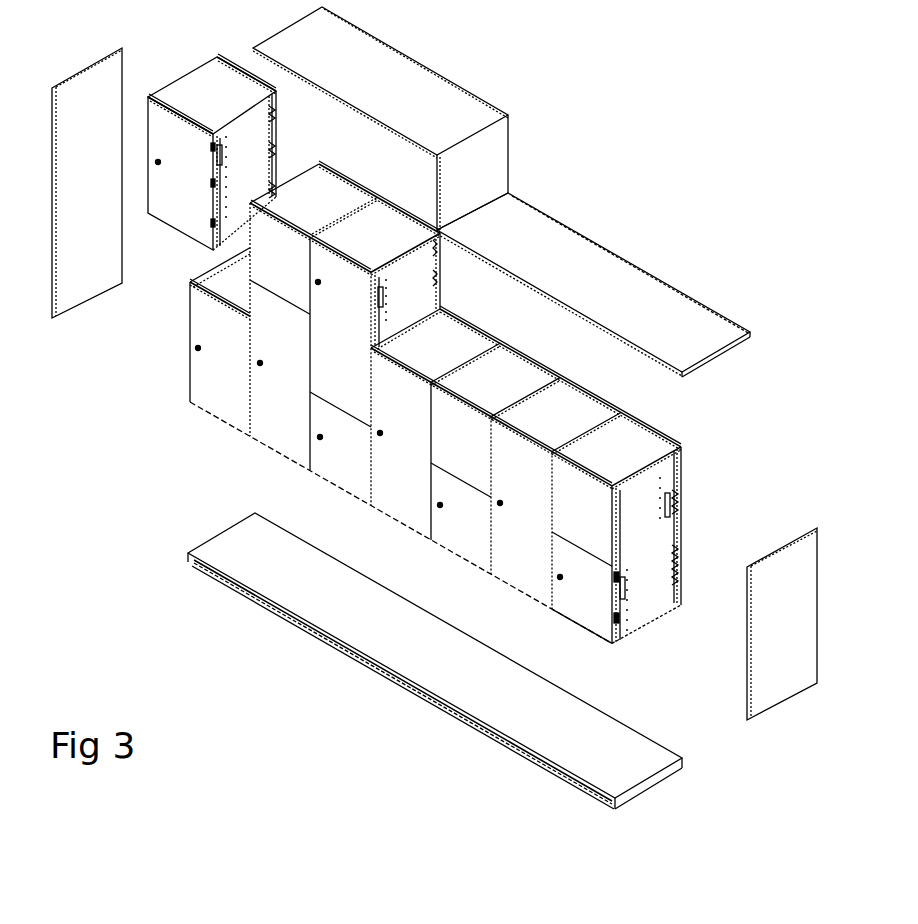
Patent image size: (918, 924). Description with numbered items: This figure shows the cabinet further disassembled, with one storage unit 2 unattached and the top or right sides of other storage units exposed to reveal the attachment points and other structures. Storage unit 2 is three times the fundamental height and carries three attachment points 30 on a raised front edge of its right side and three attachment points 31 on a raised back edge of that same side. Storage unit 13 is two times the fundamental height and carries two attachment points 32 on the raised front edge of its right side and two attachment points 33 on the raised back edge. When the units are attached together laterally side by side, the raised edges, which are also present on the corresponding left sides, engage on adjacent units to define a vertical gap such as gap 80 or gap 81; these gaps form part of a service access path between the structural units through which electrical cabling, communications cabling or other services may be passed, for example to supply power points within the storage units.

The storage unit 2 is at (187, 82).
The storage unit 13 is at (586, 651).
The attachment points 30 is at (212, 147).
The attachment points 31 is at (274, 192).
The attachment points 32 is at (616, 577).
The attachment points 33 is at (677, 590).
The vertical gap 80 is at (357, 213).
The vertical gap 81 is at (475, 362).